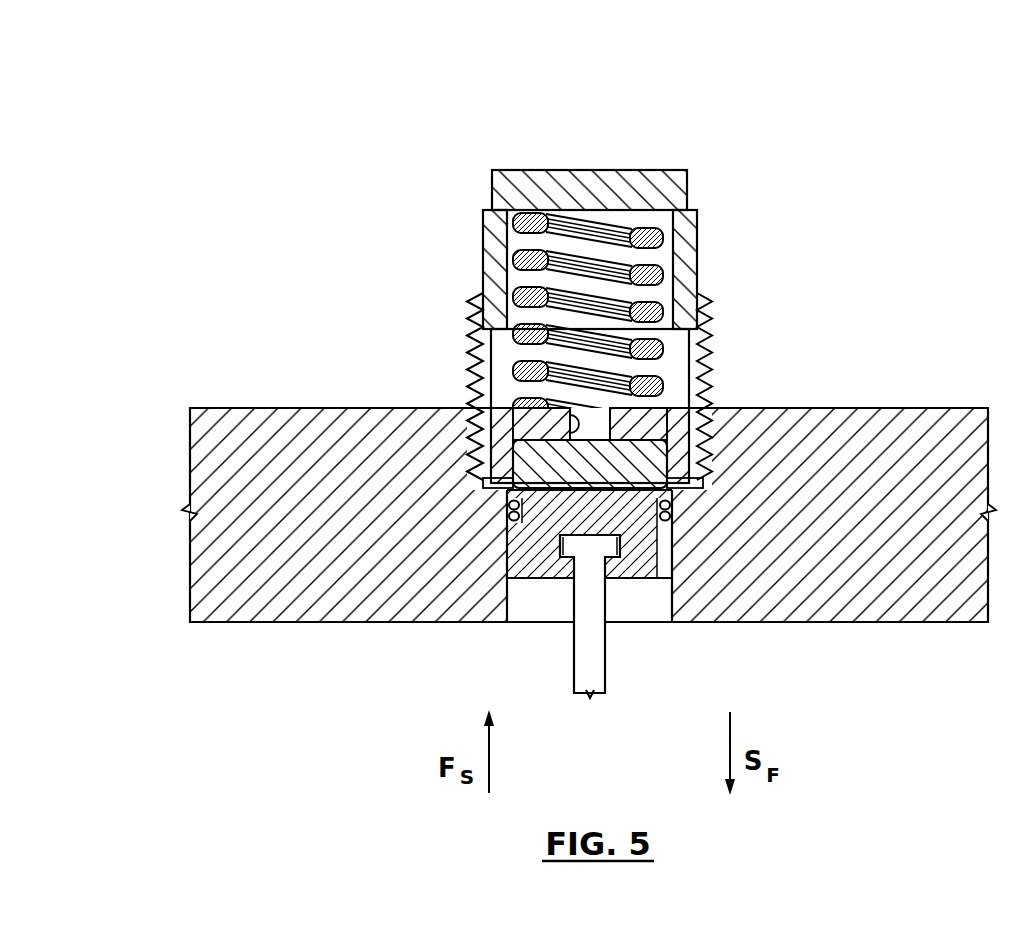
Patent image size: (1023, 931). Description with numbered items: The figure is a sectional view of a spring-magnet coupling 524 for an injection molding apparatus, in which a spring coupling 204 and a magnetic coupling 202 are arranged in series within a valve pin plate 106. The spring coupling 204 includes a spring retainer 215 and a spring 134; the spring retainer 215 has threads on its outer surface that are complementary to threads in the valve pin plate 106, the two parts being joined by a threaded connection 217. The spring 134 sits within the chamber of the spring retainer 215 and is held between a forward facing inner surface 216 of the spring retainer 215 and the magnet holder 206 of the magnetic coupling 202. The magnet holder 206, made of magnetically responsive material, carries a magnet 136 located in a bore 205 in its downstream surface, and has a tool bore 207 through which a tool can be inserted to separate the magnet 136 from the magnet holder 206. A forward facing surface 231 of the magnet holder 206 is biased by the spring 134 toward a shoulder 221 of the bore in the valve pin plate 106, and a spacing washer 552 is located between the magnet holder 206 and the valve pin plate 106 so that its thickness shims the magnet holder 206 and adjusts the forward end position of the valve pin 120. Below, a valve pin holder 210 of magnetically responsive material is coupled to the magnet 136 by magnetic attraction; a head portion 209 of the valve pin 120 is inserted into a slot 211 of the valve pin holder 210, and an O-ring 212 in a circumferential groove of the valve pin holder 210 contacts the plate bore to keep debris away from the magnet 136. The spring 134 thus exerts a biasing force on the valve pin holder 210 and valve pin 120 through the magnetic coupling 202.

The spring-magnet coupling 524 is at (896, 146).
The forward facing inner surface 216 is at (597, 228).
The spring 134 is at (660, 237).
The spring retainer 215 is at (687, 260).
The spring coupling 204 is at (455, 320).
The valve pin plate 106 is at (928, 407).
The magnet holder 206 is at (710, 427).
The tool bore 207 is at (575, 418).
The threaded connection 217 is at (475, 432).
The shoulder 221 is at (700, 483).
The spacing washer 552 is at (508, 500).
The forward facing surface 231 is at (488, 485).
The bore 205 is at (510, 508).
The magnet 136 is at (672, 503).
The magnetic coupling 202 is at (475, 539).
The head portion 209 is at (560, 557).
The valve pin holder 210 is at (630, 566).
The slot 211 is at (620, 547).
The O-ring 212 is at (677, 500).
The valve pin 120 is at (605, 675).